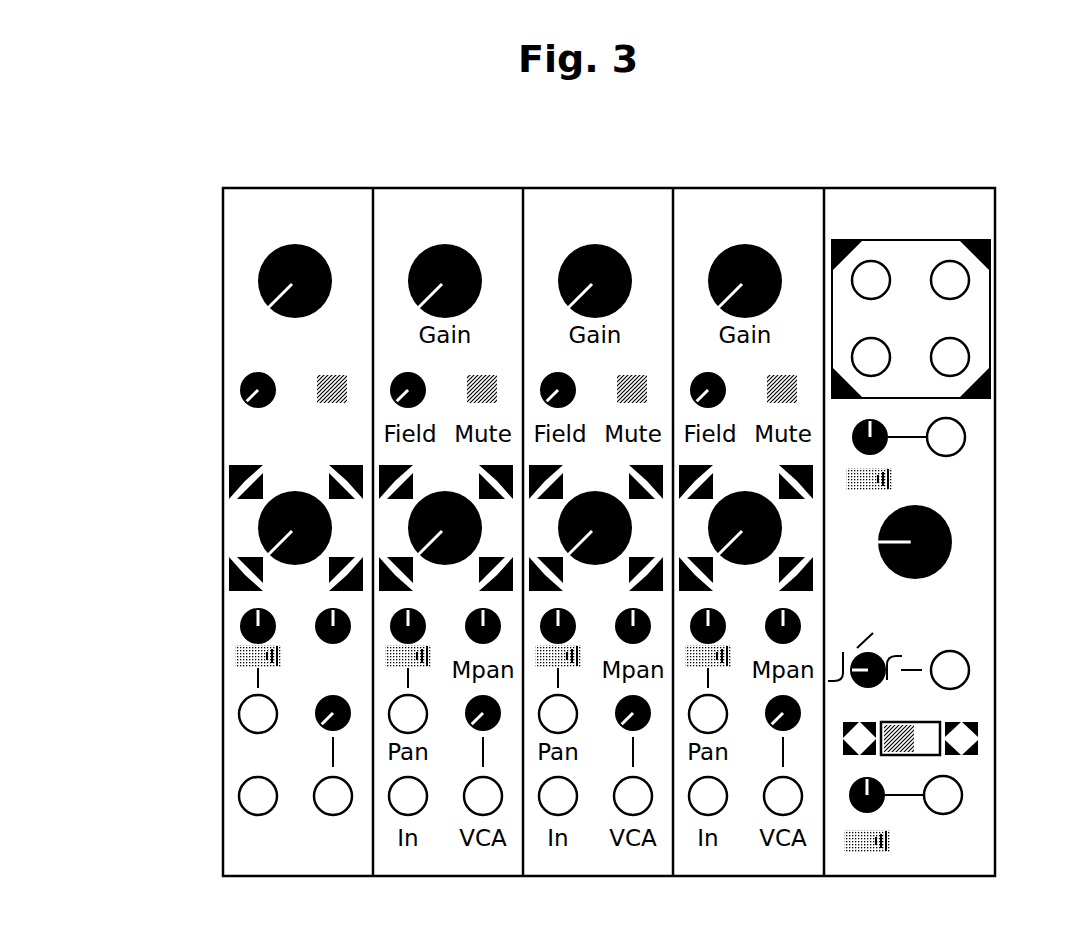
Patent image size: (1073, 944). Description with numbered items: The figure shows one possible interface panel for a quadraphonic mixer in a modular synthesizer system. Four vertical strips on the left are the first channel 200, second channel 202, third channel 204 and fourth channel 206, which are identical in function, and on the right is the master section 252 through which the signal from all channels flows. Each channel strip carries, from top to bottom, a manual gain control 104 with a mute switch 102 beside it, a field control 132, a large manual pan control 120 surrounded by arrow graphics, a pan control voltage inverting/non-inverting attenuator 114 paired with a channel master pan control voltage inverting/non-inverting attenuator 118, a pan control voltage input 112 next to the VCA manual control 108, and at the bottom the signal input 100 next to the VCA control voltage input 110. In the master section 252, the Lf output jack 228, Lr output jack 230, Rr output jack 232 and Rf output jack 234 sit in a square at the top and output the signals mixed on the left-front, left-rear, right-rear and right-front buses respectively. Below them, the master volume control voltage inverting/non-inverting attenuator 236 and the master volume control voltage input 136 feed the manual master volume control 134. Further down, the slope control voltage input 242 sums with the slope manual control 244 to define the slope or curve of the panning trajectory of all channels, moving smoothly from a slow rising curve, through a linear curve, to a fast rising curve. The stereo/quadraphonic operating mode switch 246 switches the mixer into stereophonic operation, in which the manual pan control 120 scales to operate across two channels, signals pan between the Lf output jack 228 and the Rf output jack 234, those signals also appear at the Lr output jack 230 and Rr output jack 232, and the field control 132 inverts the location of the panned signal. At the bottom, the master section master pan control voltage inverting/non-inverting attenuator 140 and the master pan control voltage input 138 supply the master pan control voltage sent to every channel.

The signal input 100 is at (258, 796).
The mute switch 102 is at (327, 385).
The manual gain control 104 is at (258, 281).
The VCA manual control 108 is at (322, 706).
The VCA control voltage input 110 is at (322, 790).
The pan control voltage input 112 is at (258, 712).
The pan control voltage inverting/non-inverting attenuator 114 is at (240, 626).
The channel master pan control voltage inverting/non-inverting attenuator 118 is at (322, 620).
The manual pan control 120 is at (258, 528).
The field control 132 is at (245, 390).
The manual master volume control 134 is at (952, 542).
The master volume control voltage input 136 is at (946, 437).
The master pan control voltage input 138 is at (943, 795).
The master section master pan control voltage inverting/non-inverting attenuator 140 is at (867, 777).
The channel 1 200 is at (258, 201).
The channel 2 202 is at (421, 202).
The channel 3 204 is at (571, 202).
The channel 4 206 is at (721, 202).
The Lf output jack 228 is at (871, 357).
The Lr output jack 230 is at (871, 280).
The Rr output jack 232 is at (950, 280).
The Rf output jack 234 is at (950, 357).
The master volume control voltage inverting/non-inverting attenuator 236 is at (870, 420).
The slope control voltage input 242 is at (950, 670).
The slope manual control 244 is at (868, 688).
The stereo/quadraphonic operating mode switch 246 is at (925, 738).
The master section 252 is at (902, 201).